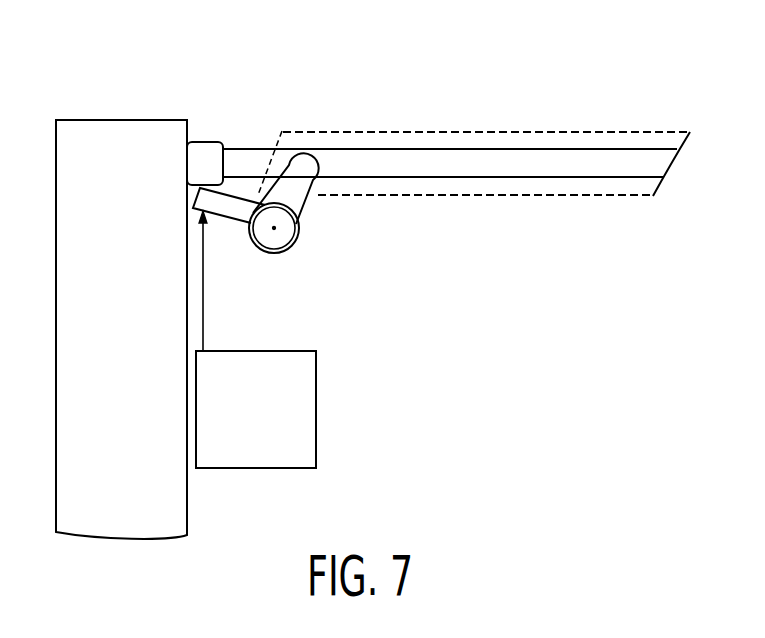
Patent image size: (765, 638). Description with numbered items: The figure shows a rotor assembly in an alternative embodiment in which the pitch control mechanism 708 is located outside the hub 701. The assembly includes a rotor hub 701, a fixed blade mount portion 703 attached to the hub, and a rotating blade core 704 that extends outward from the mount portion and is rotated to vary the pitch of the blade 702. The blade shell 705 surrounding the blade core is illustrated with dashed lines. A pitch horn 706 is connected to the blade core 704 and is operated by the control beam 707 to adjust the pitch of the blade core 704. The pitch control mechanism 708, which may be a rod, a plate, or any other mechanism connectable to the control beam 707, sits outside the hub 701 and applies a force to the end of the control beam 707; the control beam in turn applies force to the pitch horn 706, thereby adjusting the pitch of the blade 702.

The rotor hub 701 is at (131, 120).
The blade 702 is at (348, 80).
The fixed blade mount portion 703 is at (212, 141).
The rotating blade core 704 is at (490, 148).
The blade shell 705 is at (585, 133).
The pitch horn 706 is at (301, 188).
The control beam 707 is at (234, 219).
The pitch control mechanism 708 is at (317, 407).